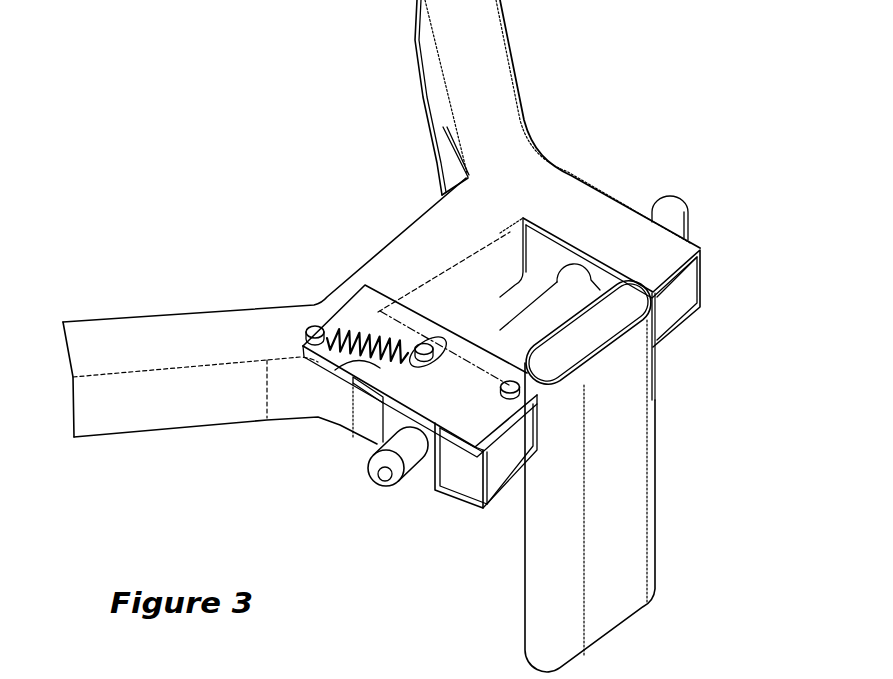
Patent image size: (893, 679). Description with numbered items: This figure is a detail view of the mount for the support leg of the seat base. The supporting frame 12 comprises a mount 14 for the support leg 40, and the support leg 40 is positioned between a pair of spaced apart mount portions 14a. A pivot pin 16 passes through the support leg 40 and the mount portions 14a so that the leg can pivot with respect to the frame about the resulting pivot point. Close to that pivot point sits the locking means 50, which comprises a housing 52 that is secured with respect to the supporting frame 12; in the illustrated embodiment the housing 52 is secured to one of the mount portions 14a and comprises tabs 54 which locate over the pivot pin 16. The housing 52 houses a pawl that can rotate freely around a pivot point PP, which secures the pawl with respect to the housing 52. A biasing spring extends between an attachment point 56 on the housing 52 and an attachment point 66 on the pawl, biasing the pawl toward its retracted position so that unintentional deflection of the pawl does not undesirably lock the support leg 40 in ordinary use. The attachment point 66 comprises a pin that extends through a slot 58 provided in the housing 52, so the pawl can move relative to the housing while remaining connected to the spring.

The supporting frame 12 is at (485, 77).
The mount 14 is at (580, 207).
The mount portions 14a is at (712, 273).
The pivot pin 16 is at (678, 207).
The support leg 40 is at (630, 482).
The locking means 50 is at (318, 295).
The housing 52 is at (357, 367).
The tabs 54 is at (420, 482).
The attachment point 56 is at (313, 328).
The slot 58 is at (353, 390).
The attachment point 66 is at (423, 343).
The pivot point PP is at (490, 392).